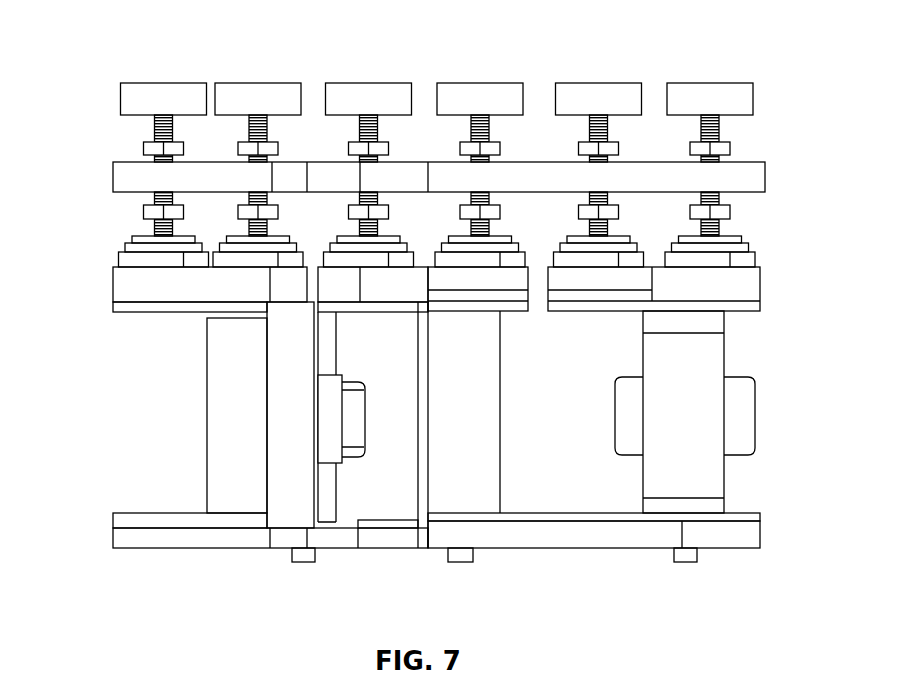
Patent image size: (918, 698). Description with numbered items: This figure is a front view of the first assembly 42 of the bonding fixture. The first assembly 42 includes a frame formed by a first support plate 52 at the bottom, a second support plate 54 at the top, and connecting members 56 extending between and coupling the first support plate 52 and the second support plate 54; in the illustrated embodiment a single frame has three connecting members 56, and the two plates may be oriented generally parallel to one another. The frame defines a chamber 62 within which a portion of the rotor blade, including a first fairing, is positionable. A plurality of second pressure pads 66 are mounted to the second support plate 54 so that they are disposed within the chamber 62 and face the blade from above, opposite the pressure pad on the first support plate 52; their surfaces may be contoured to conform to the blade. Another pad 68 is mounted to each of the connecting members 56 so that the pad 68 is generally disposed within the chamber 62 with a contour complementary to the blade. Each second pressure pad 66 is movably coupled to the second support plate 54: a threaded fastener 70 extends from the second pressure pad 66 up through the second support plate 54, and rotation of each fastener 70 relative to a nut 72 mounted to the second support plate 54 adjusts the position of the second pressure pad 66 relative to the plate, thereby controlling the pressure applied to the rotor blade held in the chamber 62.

The first assembly 42 is at (766, 26).
The first support plate 52 is at (598, 538).
The second support plate 54 is at (113, 178).
The connecting member 56 is at (277, 425).
The chamber 62 is at (134, 359).
The second pressure pad 66 is at (113, 283).
The pad 68 is at (217, 386).
The threaded fastener 70 is at (233, 83).
The nut 72 is at (592, 115).